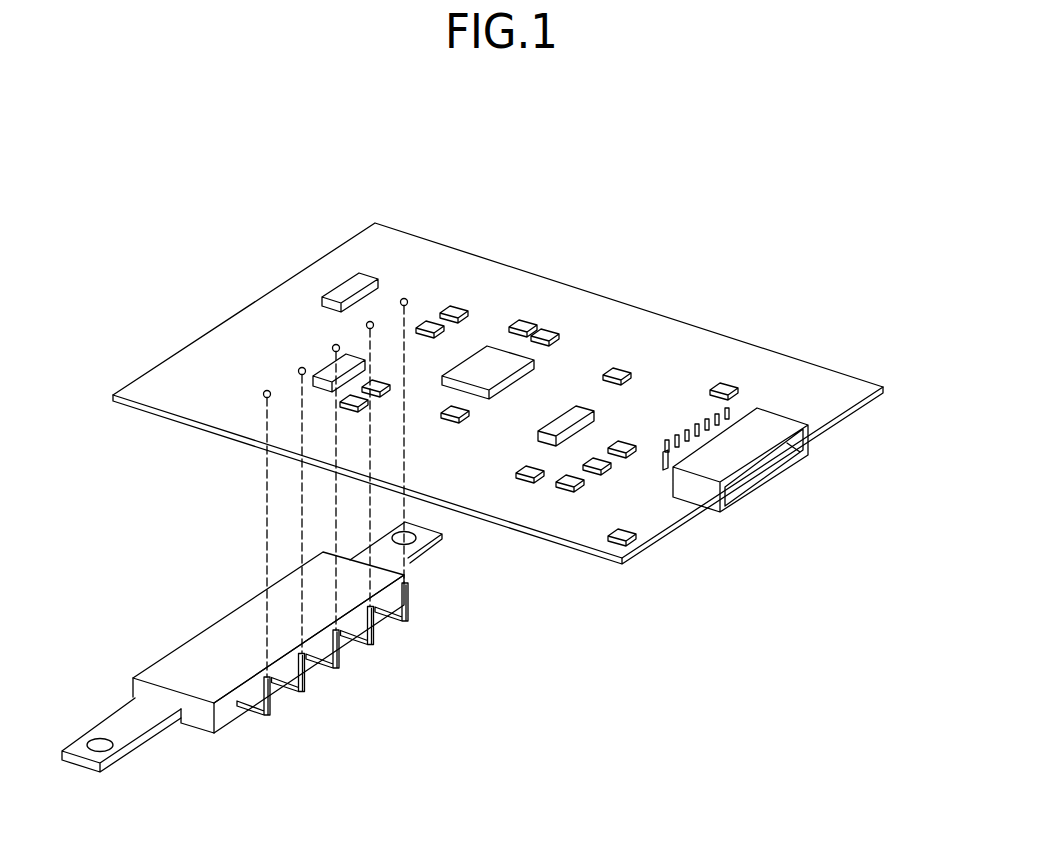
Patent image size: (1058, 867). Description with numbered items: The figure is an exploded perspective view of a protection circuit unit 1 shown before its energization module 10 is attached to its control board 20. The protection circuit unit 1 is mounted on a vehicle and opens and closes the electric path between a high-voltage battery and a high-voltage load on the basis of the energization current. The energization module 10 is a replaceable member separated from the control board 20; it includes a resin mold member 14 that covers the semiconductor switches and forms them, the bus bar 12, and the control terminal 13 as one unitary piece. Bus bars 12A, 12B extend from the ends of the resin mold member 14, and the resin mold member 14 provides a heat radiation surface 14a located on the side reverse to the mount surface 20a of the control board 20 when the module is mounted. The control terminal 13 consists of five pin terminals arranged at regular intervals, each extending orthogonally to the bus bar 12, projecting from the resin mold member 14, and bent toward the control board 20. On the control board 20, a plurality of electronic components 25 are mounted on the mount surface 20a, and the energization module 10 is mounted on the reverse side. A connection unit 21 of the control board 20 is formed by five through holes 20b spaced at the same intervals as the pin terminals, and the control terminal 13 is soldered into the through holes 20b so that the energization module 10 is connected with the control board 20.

The protection circuit unit 1 is at (551, 218).
The energization module 10 is at (196, 595).
The bus bar 12 is at (288, 669).
The bus bar 12A is at (132, 755).
The bus bar 12B is at (427, 558).
The control terminal 13 is at (395, 627).
The resin mold member 14 is at (165, 667).
The heat radiation surface 14a is at (222, 720).
The control board 20 is at (652, 298).
The mount surface 20a is at (718, 348).
The through holes 20b is at (267, 390).
The connection unit 21 is at (336, 348).
The electronic components 25 is at (477, 362).